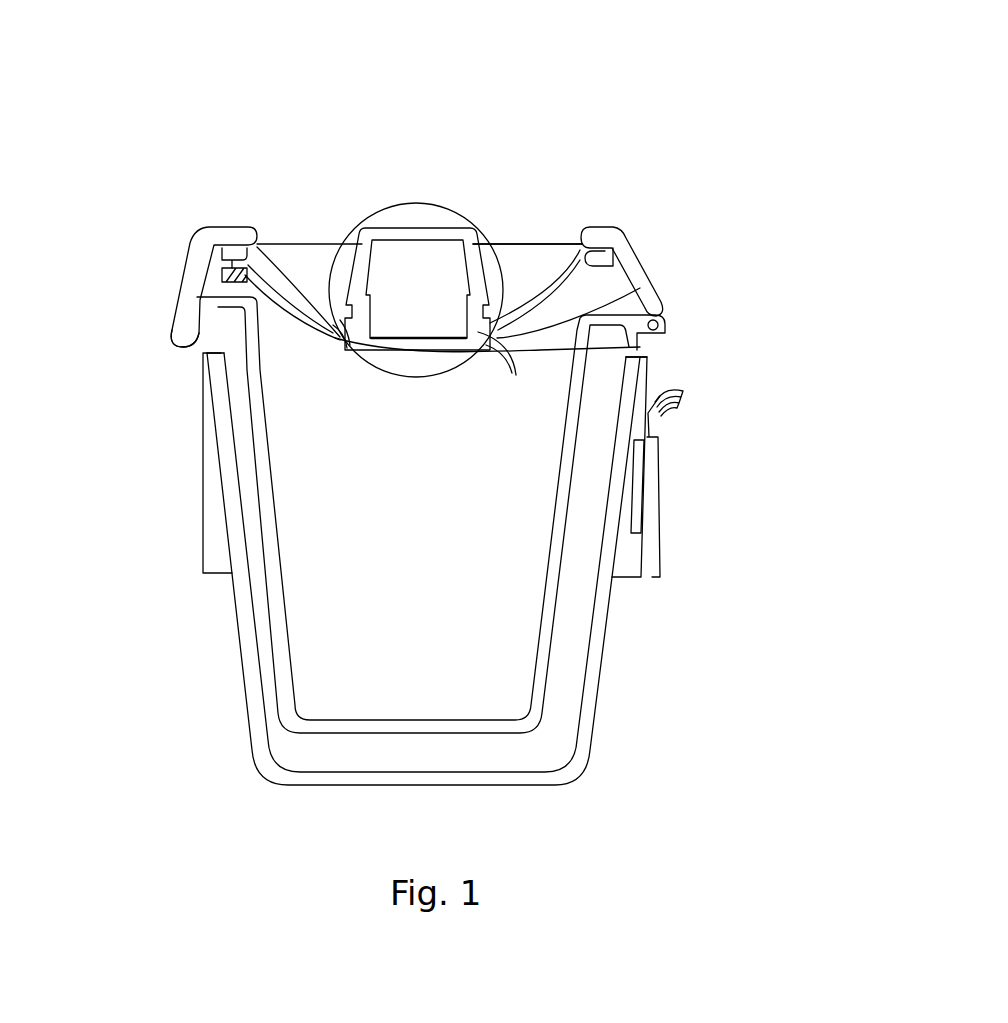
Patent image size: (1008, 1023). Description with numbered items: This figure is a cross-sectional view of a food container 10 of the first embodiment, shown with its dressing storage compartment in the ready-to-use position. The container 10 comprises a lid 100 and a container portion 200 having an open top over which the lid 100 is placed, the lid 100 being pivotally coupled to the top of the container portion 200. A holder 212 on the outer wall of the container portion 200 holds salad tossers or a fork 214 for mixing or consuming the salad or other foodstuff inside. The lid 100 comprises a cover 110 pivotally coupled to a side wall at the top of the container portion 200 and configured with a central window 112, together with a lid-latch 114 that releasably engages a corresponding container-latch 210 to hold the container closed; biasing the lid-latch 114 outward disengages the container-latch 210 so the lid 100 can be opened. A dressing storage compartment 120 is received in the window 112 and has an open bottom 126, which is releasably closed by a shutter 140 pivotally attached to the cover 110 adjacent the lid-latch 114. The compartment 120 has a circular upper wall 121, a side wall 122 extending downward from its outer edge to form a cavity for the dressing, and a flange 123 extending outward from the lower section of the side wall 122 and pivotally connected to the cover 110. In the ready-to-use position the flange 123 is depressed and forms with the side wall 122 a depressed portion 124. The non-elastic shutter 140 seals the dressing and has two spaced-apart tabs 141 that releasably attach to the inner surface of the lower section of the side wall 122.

The container 10 is at (755, 381).
The lid 100 is at (170, 265).
The cover 110 is at (227, 233).
The central window 112 is at (525, 212).
The lid-latch 114 is at (177, 332).
The dressing storage compartment 120 is at (450, 198).
The circular upper wall 121 is at (417, 237).
The side wall 122 is at (470, 255).
The flange 123 is at (284, 290).
The depressed portion 124 is at (305, 295).
The open bottom 126 is at (414, 325).
The shutter 140 is at (340, 347).
The tabs 141 is at (360, 343).
The container portion 200 is at (232, 687).
The container-latch 210 is at (205, 345).
The holder 212 is at (633, 557).
The fork 214 is at (650, 428).